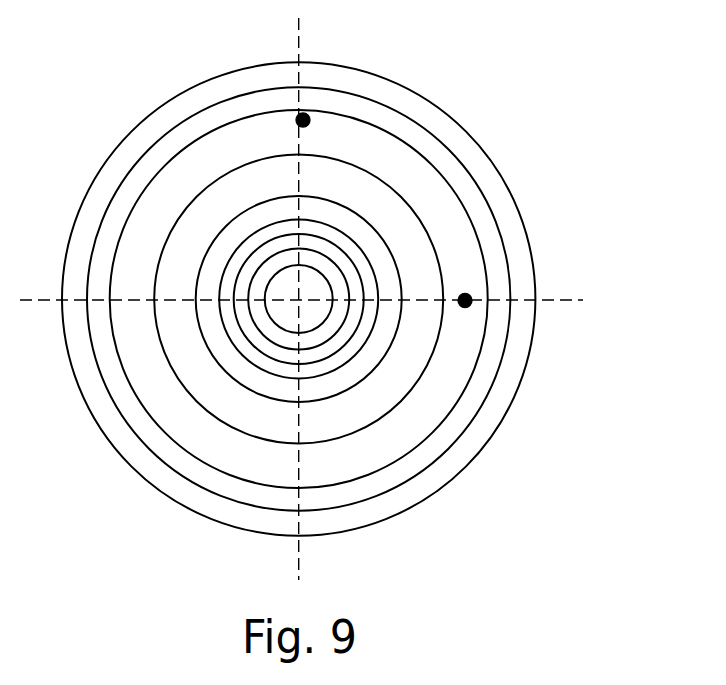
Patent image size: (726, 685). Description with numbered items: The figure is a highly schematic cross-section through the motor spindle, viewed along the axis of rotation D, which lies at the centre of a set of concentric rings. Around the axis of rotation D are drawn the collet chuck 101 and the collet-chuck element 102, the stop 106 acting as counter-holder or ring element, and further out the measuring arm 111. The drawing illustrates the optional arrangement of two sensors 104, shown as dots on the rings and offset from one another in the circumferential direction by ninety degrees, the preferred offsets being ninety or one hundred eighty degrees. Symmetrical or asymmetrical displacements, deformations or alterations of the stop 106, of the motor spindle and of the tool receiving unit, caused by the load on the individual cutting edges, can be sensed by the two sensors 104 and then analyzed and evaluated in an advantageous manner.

The collet chuck 101 is at (229, 347).
The collet-chuck element 102 is at (328, 352).
The sensor 104 is at (308, 113).
The stop 106 is at (402, 373).
The measuring arm 111 is at (465, 345).
The axis of rotation D is at (297, 298).